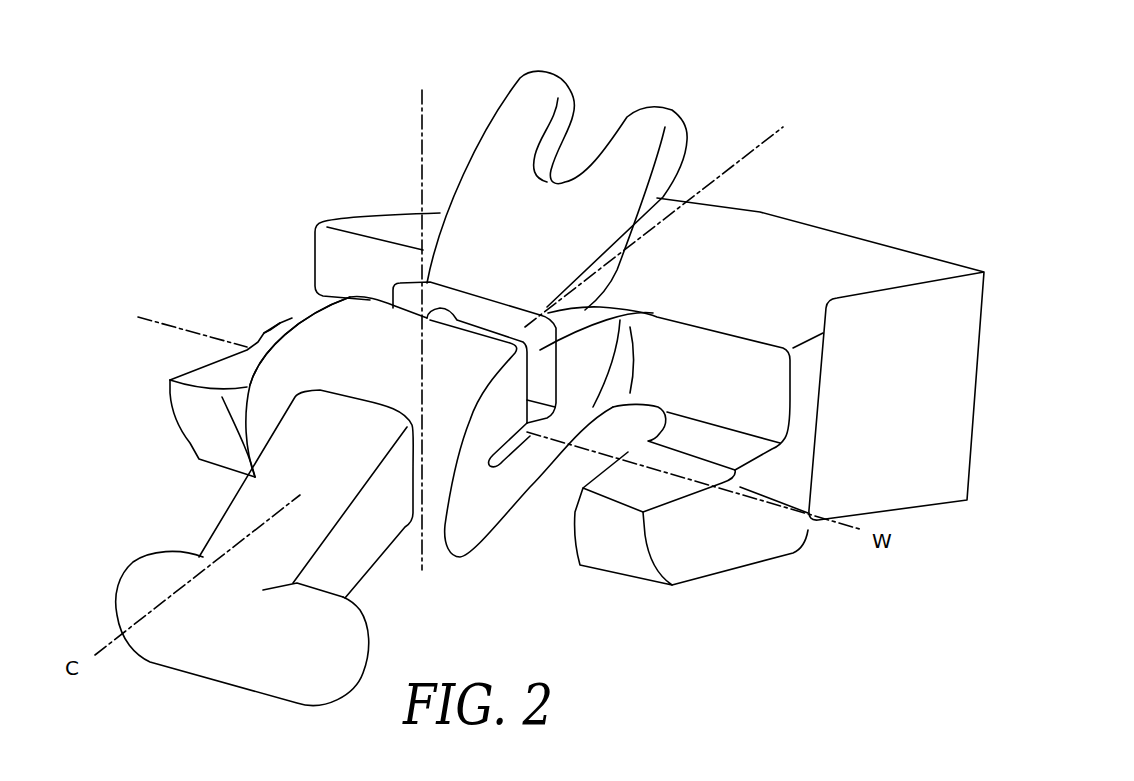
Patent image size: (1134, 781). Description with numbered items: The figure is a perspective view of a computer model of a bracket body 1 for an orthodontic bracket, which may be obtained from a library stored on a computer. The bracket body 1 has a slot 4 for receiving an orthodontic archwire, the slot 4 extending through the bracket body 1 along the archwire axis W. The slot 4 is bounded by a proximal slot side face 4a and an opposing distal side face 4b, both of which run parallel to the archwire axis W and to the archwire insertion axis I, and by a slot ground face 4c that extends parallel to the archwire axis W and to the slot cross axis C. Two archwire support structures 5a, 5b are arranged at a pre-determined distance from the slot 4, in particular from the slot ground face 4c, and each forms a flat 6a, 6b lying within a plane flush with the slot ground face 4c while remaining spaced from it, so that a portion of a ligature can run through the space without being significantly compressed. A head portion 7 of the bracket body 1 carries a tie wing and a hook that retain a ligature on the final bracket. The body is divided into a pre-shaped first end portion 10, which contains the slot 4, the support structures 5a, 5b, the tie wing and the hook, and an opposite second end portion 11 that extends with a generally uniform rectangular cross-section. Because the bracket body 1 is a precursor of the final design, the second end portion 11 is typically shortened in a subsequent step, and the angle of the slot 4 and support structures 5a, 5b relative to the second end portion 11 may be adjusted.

The bracket body 1 is at (537, 98).
The slot 4 is at (452, 322).
The proximal slot side face 4a is at (653, 313).
The distal side face 4b is at (375, 297).
The slot ground face 4c is at (505, 458).
The archwire support structure 5a is at (668, 552).
The archwire support structure 5b is at (168, 403).
The flat 6a is at (627, 487).
The flat 6b is at (210, 373).
The head portion 7 is at (272, 410).
The first end portion 10 is at (238, 322).
The second end portion 11 is at (857, 257).